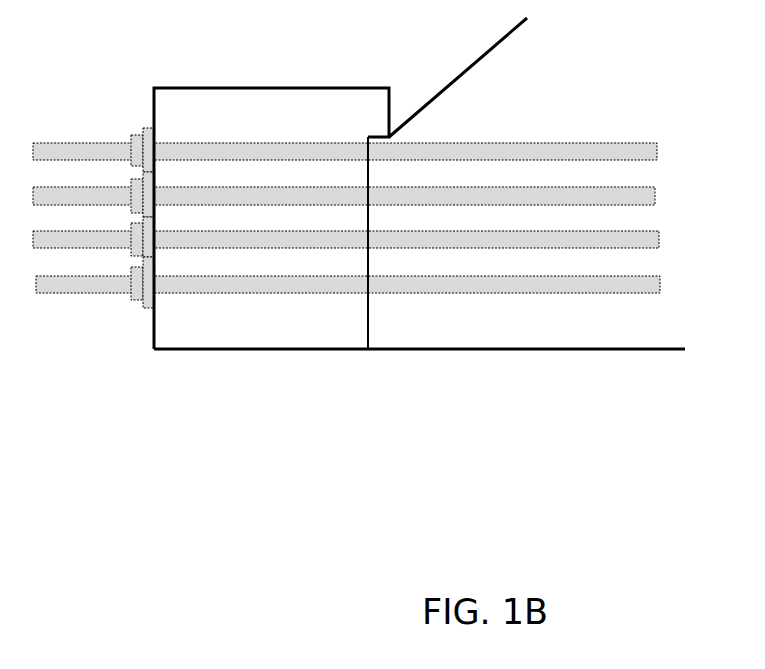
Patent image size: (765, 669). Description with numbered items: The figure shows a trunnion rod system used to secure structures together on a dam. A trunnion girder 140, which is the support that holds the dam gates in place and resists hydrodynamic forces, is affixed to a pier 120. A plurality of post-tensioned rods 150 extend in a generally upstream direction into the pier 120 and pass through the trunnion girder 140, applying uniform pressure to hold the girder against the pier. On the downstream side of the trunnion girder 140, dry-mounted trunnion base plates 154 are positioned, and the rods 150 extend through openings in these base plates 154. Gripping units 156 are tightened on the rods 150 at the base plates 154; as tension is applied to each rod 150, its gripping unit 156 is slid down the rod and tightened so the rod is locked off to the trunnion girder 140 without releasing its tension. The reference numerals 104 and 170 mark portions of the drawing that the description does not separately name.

The substrate 104 is at (287, 392).
The pier 120 is at (492, 100).
The trunnion girder 140 is at (210, 353).
The tension rods 150 is at (60, 293).
The trunnion base plates 154 is at (147, 125).
The gripping units 156 is at (130, 303).
The fiber connector region 170 is at (88, 374).